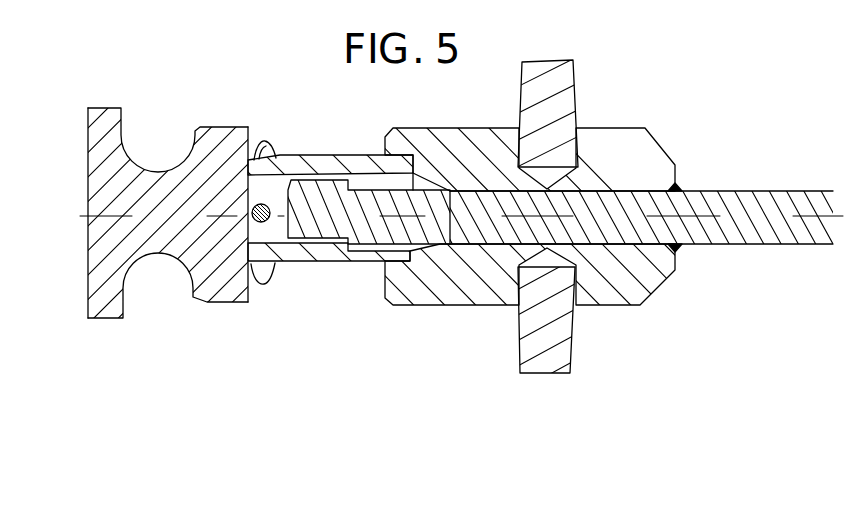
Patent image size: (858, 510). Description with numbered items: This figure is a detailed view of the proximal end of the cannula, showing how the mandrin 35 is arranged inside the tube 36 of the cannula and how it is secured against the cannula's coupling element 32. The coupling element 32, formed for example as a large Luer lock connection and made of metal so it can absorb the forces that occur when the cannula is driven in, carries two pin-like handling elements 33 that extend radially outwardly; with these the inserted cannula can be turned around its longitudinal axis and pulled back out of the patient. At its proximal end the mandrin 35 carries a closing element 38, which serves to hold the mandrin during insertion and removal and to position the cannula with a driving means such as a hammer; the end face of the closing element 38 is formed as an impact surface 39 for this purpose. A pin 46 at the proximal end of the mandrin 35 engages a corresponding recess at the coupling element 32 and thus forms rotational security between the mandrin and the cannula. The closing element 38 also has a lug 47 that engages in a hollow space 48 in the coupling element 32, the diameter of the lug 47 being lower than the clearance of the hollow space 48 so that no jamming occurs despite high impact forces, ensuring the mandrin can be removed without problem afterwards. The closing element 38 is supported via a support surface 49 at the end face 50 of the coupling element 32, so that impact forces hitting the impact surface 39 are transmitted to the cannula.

The coupling element 32 is at (430, 277).
The pin-like handling elements 33 is at (563, 80).
The mandrin 35 is at (745, 210).
The tube 36 is at (802, 192).
The closing element 38 is at (133, 128).
The impact surface 39 is at (84, 114).
The pin 46 is at (271, 212).
The lug 47 is at (289, 180).
The hollow space 48 is at (356, 262).
The support surface 49 is at (248, 150).
The end face 50 is at (254, 152).